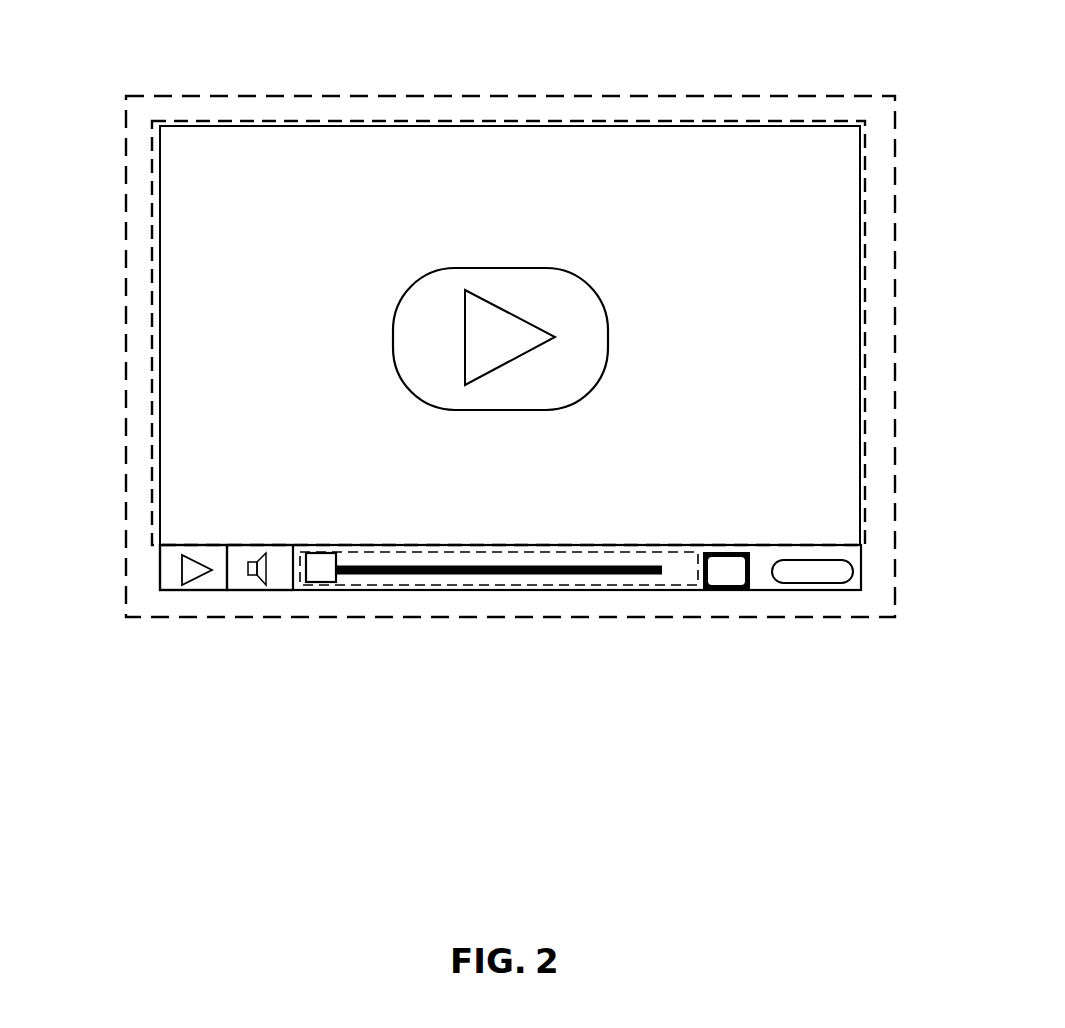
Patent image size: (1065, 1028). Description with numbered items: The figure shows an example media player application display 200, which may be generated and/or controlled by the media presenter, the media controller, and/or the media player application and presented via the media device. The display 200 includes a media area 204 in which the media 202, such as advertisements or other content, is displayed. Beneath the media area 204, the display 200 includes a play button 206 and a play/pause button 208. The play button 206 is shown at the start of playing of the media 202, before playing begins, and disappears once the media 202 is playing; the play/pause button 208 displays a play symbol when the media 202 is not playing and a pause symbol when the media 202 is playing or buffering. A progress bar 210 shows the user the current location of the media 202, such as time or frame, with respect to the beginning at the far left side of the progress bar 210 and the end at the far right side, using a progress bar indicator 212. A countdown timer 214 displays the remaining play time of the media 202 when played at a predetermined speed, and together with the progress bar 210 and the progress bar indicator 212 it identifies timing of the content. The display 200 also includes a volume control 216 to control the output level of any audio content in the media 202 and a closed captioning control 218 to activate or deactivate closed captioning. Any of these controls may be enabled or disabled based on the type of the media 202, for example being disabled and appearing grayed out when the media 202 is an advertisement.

The media player application display 200 is at (460, 320).
The media 202 is at (549, 333).
The media area 204 is at (470, 335).
The play button 206 is at (461, 339).
The play/pause button 208 is at (158, 596).
The progress bar 210 is at (499, 605).
The progress bar indicator 212 is at (364, 626).
The countdown timer 214 is at (796, 614).
The volume control 216 is at (238, 601).
The closed captioning control 218 is at (682, 616).